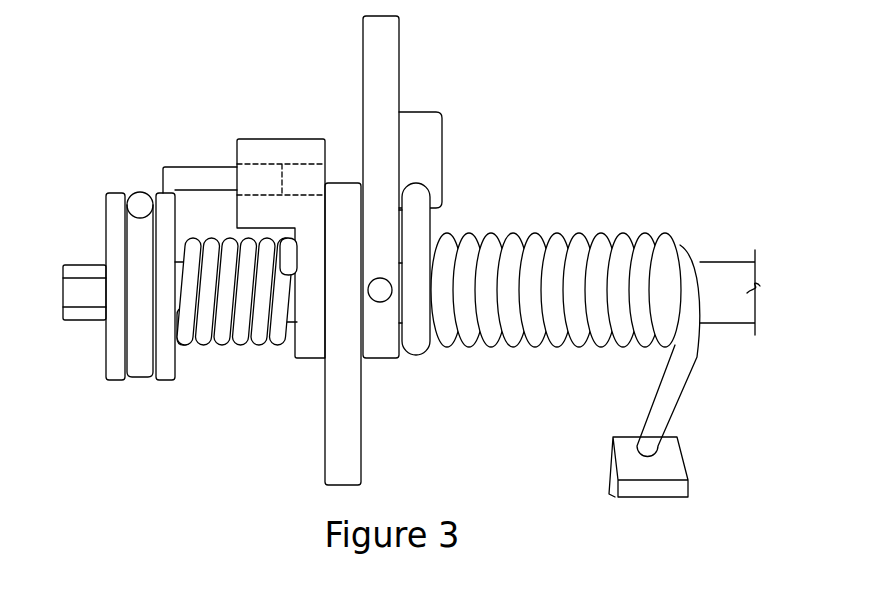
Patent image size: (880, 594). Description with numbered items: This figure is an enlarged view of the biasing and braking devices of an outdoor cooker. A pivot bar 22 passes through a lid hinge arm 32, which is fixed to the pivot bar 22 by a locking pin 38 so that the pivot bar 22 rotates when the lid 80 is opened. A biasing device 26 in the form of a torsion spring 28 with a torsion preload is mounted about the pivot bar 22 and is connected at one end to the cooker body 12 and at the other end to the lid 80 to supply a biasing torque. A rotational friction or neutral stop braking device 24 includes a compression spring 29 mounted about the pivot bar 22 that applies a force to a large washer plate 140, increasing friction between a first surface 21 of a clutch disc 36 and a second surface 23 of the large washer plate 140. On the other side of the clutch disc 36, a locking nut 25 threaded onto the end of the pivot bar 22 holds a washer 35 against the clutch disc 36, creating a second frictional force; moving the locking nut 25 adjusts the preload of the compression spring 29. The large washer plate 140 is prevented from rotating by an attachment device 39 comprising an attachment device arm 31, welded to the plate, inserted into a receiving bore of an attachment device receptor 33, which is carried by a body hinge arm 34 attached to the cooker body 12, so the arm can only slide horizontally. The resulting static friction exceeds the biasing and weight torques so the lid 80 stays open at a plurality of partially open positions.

The cooker body 12 is at (688, 452).
The first surface 21 is at (153, 232).
The pivot bar 22 is at (718, 262).
The second surface 23 is at (150, 204).
The neutral stop braking device 24 is at (240, 362).
The locking nut 25 is at (63, 297).
The biasing device 26 is at (525, 363).
The torsion spring 28 is at (540, 233).
The compression spring 29 is at (205, 240).
The attachment device arm 31 is at (177, 170).
The lid hinge arm 32 is at (399, 56).
The attachment device receptor 33 is at (298, 144).
The body hinge arm 34 is at (323, 392).
The washer 35 is at (106, 250).
The clutch disc 36 is at (132, 380).
The locking pin 38 is at (384, 278).
The attachment device 39 is at (218, 153).
The lid 80 is at (442, 143).
The large washer plate 140 is at (165, 380).